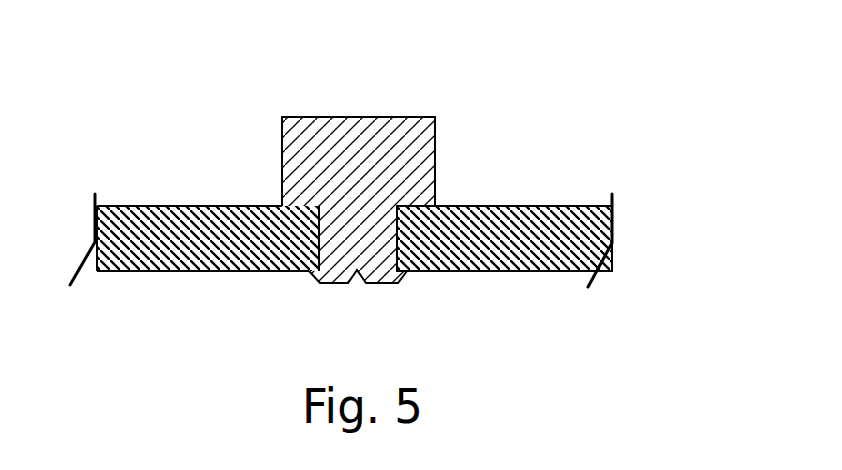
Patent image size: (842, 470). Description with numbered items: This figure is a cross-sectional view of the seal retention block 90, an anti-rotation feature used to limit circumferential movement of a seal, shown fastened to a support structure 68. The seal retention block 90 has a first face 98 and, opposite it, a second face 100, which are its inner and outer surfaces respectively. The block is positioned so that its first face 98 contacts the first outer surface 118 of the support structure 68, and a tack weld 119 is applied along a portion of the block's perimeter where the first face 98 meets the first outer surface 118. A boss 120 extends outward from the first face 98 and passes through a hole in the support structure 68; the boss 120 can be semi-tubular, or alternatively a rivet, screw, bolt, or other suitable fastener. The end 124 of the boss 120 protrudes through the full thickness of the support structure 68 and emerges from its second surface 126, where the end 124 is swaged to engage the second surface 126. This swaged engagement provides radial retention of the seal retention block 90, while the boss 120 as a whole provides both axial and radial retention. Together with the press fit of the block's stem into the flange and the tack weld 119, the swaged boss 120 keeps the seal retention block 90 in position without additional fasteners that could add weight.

The support structure 68 is at (546, 253).
The seal retention block 90 is at (392, 116).
The first face 98 is at (299, 209).
The second face 100 is at (316, 116).
The first outer surface 118 is at (561, 205).
The tack weld 119 is at (282, 205).
The boss 120 is at (352, 243).
The end 124 is at (358, 286).
The second surface 126 is at (502, 275).